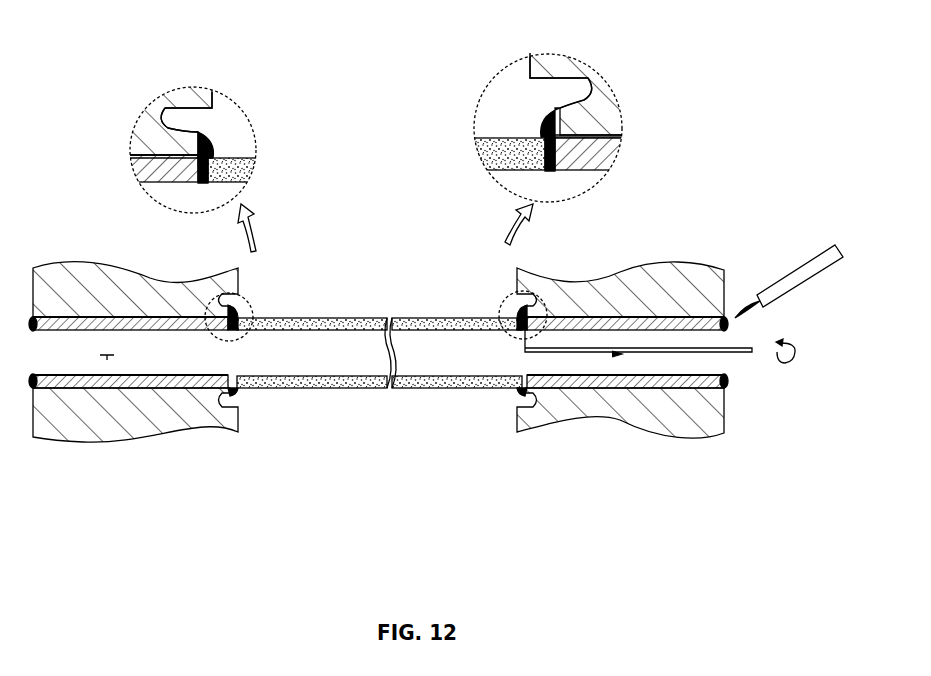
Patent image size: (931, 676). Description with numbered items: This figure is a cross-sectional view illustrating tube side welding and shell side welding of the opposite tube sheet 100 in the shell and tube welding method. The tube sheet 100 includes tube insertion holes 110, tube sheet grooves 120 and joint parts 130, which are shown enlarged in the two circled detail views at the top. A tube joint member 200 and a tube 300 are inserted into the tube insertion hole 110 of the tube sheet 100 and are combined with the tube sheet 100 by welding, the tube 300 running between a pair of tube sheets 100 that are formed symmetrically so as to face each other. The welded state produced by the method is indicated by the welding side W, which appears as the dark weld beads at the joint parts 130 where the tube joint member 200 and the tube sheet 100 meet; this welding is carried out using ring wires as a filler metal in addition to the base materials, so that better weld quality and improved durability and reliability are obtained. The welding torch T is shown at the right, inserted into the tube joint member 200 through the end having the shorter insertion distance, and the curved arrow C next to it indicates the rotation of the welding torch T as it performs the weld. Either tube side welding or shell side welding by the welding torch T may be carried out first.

The tube sheet 100 is at (143, 121).
The tube insertion hole 110 is at (107, 360).
The tube sheet groove 120 is at (183, 120).
The joint part 130 is at (188, 140).
The tube joint member 200 is at (163, 182).
The tube 300 is at (220, 182).
The welding side W is at (210, 132).
The welding torch T is at (742, 348).
The rotation direction C is at (650, 352).